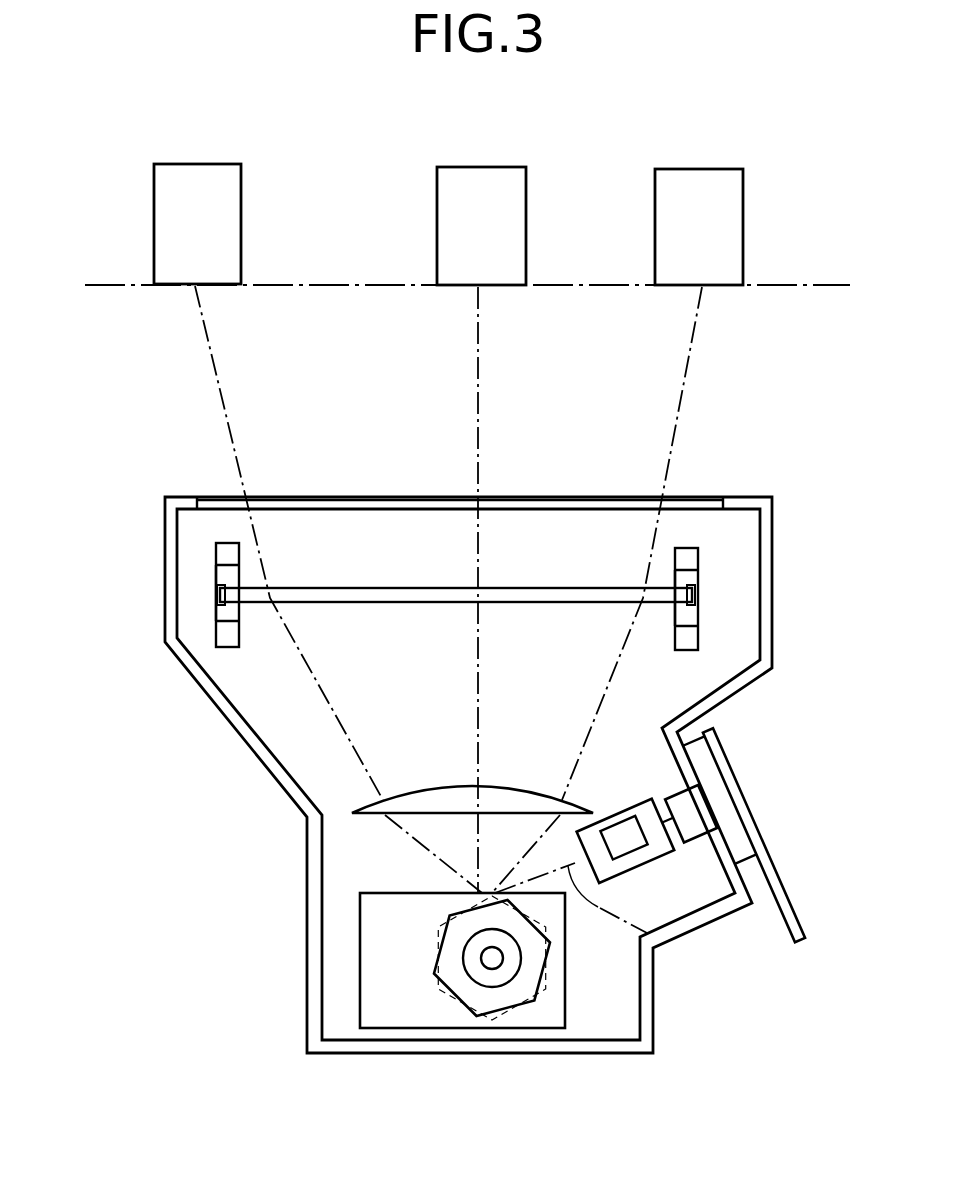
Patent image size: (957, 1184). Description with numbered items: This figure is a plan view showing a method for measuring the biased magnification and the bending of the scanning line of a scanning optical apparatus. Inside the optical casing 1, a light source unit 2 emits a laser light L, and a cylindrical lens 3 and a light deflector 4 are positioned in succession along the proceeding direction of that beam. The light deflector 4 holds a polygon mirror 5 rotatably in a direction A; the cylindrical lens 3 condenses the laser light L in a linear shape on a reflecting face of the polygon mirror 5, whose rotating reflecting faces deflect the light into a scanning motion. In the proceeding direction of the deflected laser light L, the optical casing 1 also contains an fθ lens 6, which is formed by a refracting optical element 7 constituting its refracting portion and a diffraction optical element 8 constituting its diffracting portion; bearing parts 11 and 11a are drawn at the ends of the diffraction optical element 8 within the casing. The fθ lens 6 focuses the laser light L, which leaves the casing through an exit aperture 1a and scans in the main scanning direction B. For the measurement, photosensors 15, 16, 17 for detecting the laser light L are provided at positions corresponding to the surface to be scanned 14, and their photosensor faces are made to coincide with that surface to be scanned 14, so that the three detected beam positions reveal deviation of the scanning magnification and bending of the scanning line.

The optical casing 1 is at (770, 642).
The exit aperture 1a is at (705, 508).
The light source unit 2 is at (693, 810).
The cylindrical lens 3 is at (638, 845).
The light deflector 4 is at (531, 1018).
The polygon mirror 5 is at (473, 997).
The fθ lens 6 is at (128, 620).
The refracting optical element 7 is at (365, 815).
The diffraction optical element 8 is at (365, 590).
The bearing member 11 is at (213, 548).
The bearing portion 11a is at (223, 578).
The surface to be scanned 14 is at (850, 292).
The photosensor 15 is at (693, 183).
The photosensor 16 is at (483, 180).
The photosensor 17 is at (195, 170).
The rotation direction A is at (408, 937).
The main scanning direction B is at (398, 329).
The laser light L is at (687, 372).